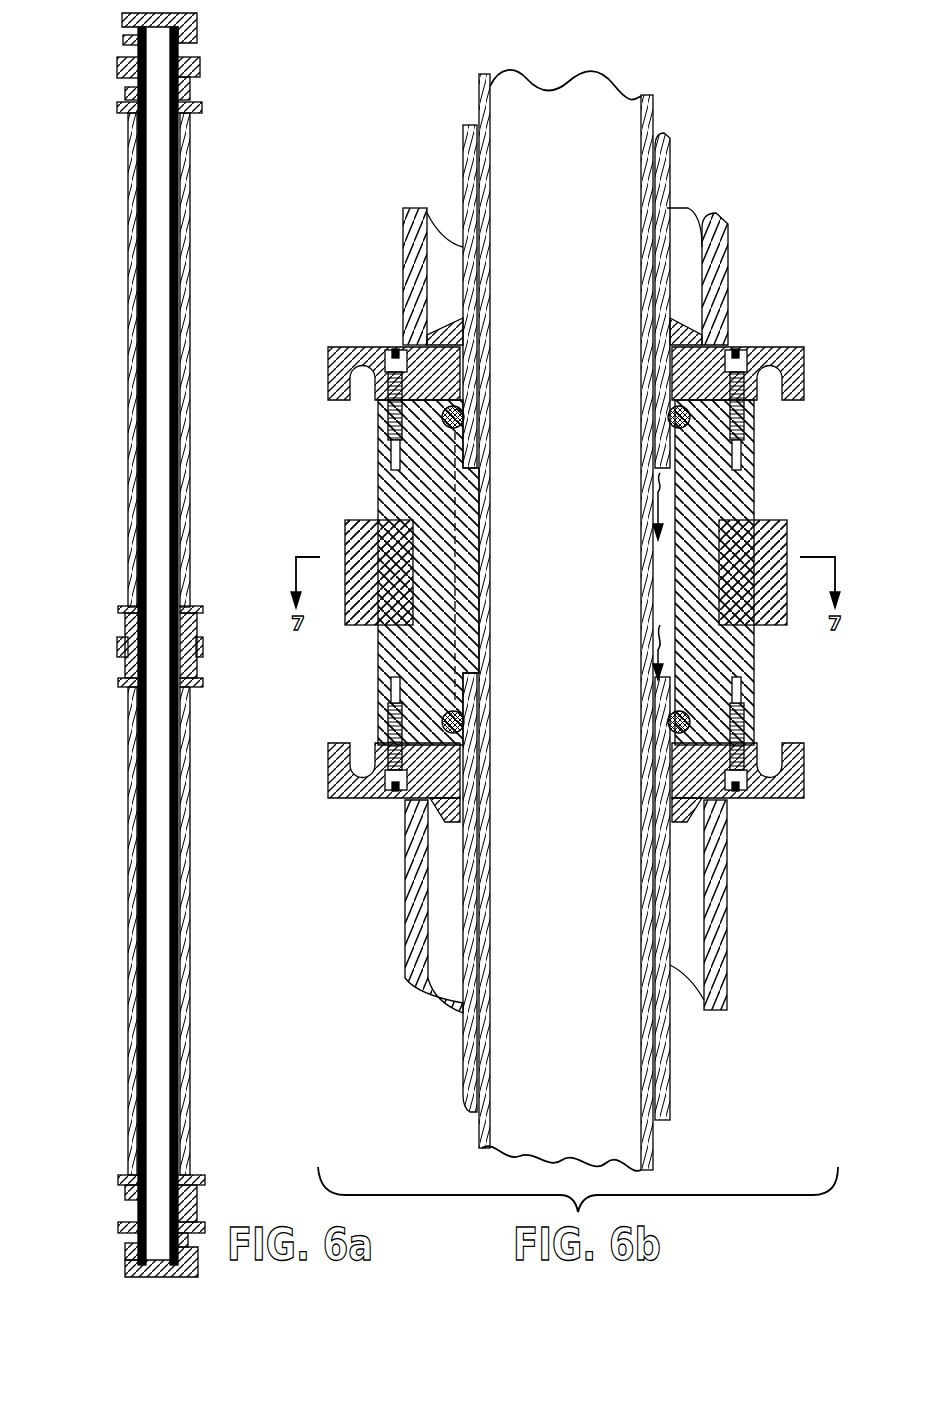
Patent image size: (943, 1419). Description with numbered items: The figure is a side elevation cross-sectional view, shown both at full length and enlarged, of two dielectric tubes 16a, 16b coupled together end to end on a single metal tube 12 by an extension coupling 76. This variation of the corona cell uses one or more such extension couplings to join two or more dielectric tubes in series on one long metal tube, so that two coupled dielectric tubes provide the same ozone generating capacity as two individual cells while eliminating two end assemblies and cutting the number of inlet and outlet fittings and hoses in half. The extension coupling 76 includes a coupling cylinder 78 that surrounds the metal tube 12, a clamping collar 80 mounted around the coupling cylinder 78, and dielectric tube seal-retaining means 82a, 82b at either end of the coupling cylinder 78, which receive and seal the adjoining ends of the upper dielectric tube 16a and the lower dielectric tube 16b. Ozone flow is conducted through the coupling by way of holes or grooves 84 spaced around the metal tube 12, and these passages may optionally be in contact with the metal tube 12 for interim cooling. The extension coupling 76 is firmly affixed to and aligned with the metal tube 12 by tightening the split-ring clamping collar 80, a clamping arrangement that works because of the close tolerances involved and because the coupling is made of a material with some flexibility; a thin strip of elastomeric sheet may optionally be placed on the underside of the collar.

In FIG. 6a, the metal tube 12 is at (163, 648).
In FIG. 6b, the metal tube 12 is at (499, 105).
In FIG. 6a, the dielectric tube 16a is at (180, 590).
In FIG. 6b, the dielectric tube 16a is at (667, 295).
In FIG. 6a, the dielectric tube 16b is at (182, 700).
In FIG. 6b, the dielectric tube 16b is at (668, 926).
In FIG. 6a, the extension coupling 76 is at (240, 678).
In FIG. 6b, the extension coupling 76 is at (348, 487).
In FIG. 6a, the coupling cylinder 78 is at (125, 631).
In FIG. 6b, the coupling cylinder 78 is at (755, 506).
In FIG. 6a, the clamping collar 80 is at (118, 647).
In FIG. 6b, the clamping collar 80 is at (787, 520).
In FIG. 6a, the dielectric tube seal-retaining means 82a is at (118, 685).
In FIG. 6b, the dielectric tube seal-retaining means 82a is at (805, 771).
In FIG. 6a, the dielectric tube seal-retaining means 82b is at (118, 609).
In FIG. 6b, the dielectric tube seal-retaining means 82b is at (805, 381).
In FIG. 6b, the holes or grooves 84 is at (668, 652).